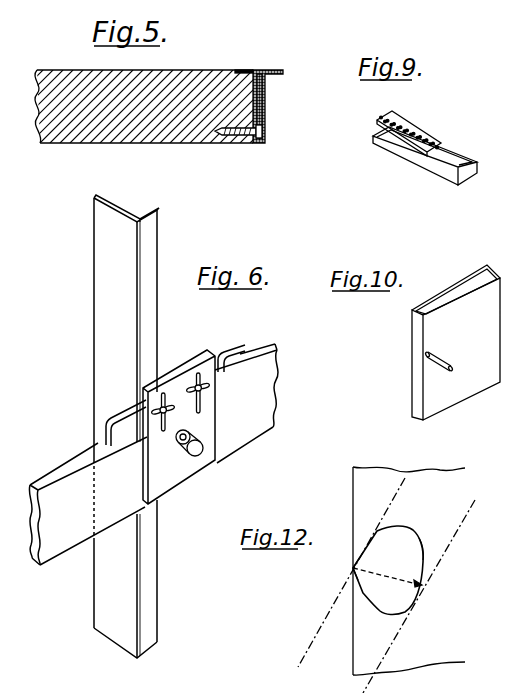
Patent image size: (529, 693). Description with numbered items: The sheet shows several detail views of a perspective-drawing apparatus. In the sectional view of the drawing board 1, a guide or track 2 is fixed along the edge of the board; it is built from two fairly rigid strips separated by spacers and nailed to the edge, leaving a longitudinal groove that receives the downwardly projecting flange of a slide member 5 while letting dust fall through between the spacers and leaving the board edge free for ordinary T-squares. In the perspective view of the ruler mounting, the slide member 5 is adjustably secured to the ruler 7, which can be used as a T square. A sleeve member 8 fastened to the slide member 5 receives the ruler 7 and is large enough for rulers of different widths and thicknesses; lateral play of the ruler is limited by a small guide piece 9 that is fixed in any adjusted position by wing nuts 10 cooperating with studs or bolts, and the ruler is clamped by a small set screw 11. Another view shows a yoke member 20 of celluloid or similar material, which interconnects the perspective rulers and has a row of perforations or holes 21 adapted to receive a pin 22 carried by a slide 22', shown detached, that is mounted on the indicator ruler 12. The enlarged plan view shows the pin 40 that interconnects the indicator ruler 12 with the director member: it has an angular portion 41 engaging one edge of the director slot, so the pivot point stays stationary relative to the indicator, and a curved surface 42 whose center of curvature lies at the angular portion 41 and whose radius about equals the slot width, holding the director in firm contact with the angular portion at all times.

In FIG. 5, the drawing board 1 is at (55, 142).
In FIG. 5, the guide or track 2 is at (264, 70).
In FIG. 6, the slide member 5 is at (152, 235).
In FIG. 6, the ruler 7 is at (234, 437).
In FIG. 6, the sleeve member 8 is at (154, 448).
In FIG. 6, the guide piece 9 is at (124, 415).
In FIG. 6, the wing nuts 10 is at (196, 373).
In FIG. 6, the set screw 11 is at (190, 457).
In FIG. 12, the indicator ruler 12 is at (357, 623).
In FIG. 9, the yoke member 20 is at (445, 152).
In FIG. 9, the perforations or holes 21 is at (415, 130).
In FIG. 10, the pin 22 is at (449, 352).
In FIG. 10, the slide 22' is at (456, 342).
In FIG. 12, the pin 40 is at (407, 568).
In FIG. 12, the angular portion 41 is at (352, 568).
In FIG. 12, the curved surface 42 is at (423, 551).